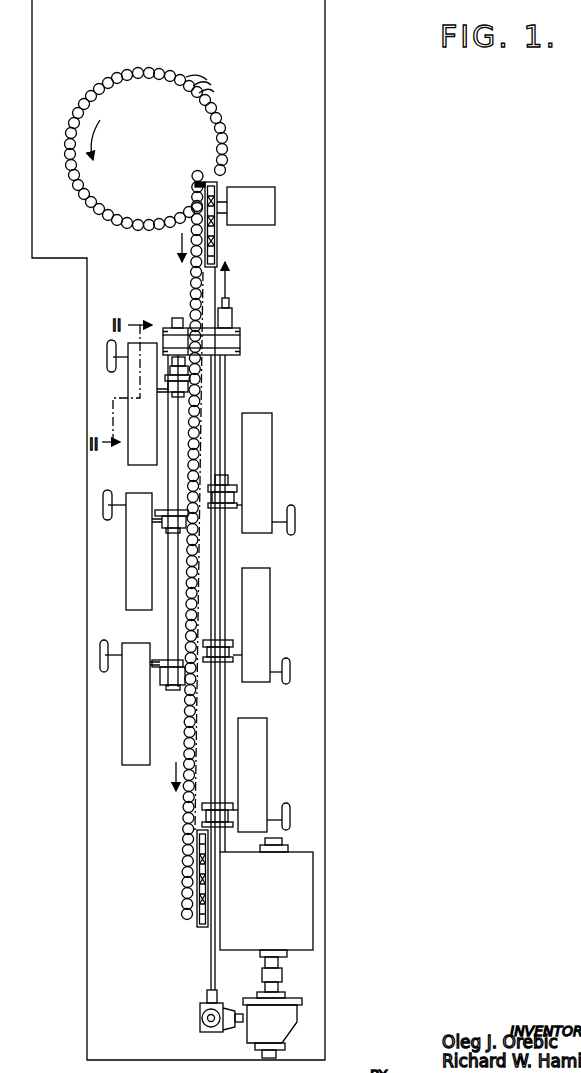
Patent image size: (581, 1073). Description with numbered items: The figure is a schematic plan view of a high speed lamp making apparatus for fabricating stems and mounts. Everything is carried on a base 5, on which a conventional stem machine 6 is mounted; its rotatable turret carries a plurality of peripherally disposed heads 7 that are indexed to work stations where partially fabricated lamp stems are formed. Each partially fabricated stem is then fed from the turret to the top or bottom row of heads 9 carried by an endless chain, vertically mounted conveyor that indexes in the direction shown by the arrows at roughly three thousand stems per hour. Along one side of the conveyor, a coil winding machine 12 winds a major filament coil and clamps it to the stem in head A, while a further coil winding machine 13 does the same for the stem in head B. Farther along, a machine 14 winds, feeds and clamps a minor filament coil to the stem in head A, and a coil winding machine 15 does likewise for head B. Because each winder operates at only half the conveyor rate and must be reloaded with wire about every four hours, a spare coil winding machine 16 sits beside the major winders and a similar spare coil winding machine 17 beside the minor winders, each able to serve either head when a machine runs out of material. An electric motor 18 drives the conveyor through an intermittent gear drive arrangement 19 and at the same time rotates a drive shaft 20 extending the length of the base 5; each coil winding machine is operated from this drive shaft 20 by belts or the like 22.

The base 5 is at (87, 818).
The stem machine 6 is at (226, 137).
The peripherally disposed heads 7 is at (212, 90).
The heads 9 is at (190, 274).
The coil winding machine 12 is at (128, 382).
The coil winding machine 13 is at (126, 548).
The coil winding machine 14 is at (273, 450).
The coil winding machine 15 is at (270, 597).
The spare coil winding machine 16 is at (122, 712).
The spare coil winding machine 17 is at (267, 745).
The electric motor 18 is at (292, 1018).
The intermittent gear drive arrangement 19 is at (296, 912).
The drive shaft 20 is at (226, 705).
The belts 22 is at (238, 508).